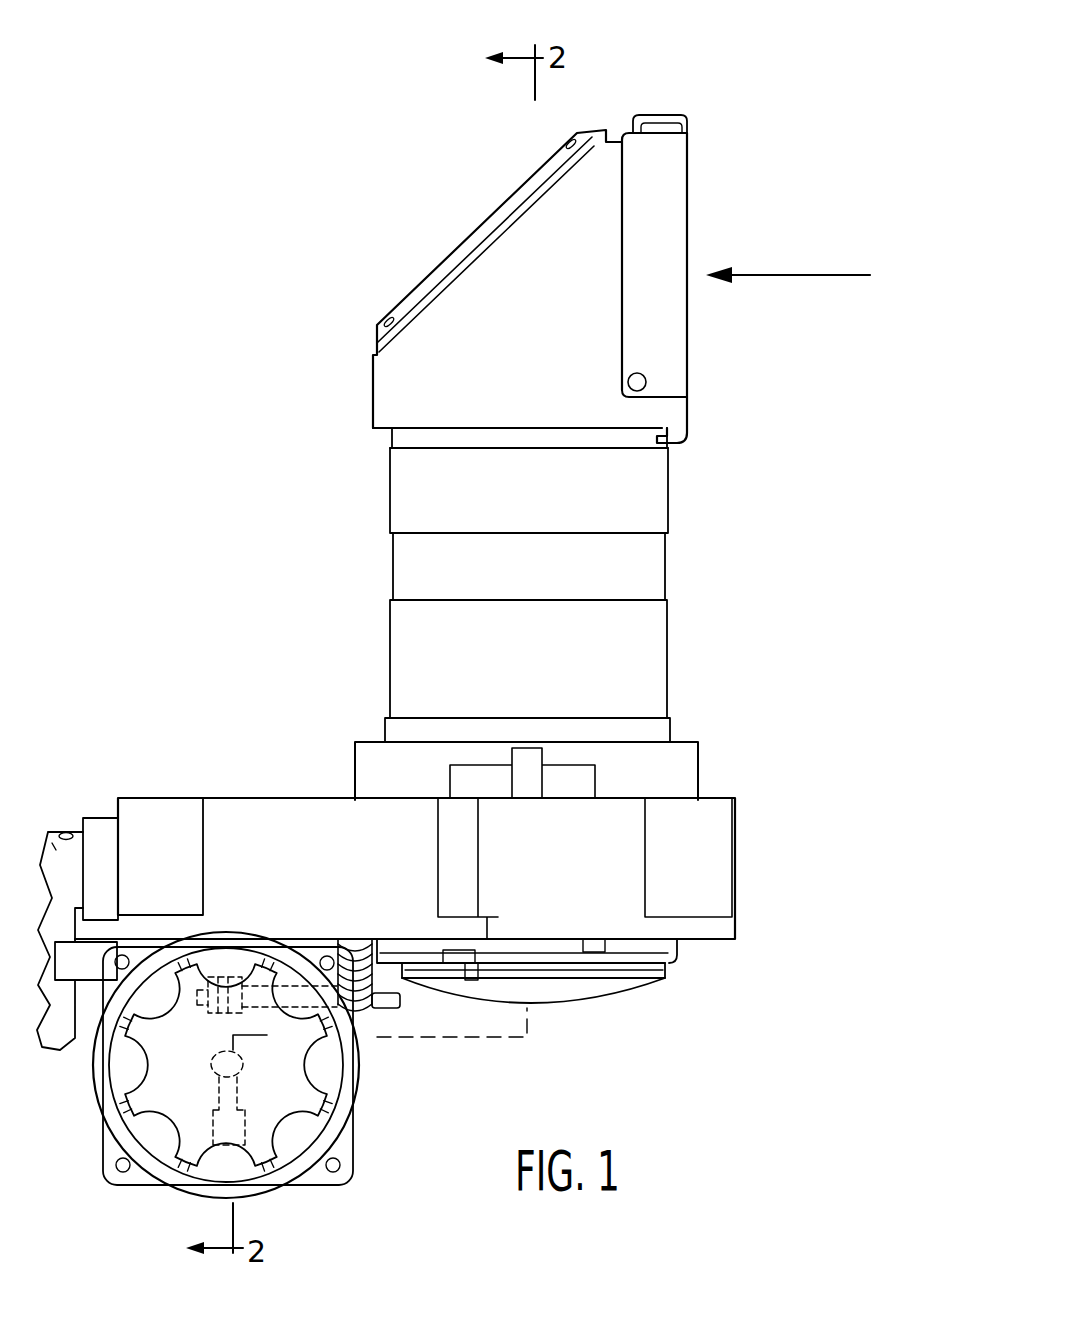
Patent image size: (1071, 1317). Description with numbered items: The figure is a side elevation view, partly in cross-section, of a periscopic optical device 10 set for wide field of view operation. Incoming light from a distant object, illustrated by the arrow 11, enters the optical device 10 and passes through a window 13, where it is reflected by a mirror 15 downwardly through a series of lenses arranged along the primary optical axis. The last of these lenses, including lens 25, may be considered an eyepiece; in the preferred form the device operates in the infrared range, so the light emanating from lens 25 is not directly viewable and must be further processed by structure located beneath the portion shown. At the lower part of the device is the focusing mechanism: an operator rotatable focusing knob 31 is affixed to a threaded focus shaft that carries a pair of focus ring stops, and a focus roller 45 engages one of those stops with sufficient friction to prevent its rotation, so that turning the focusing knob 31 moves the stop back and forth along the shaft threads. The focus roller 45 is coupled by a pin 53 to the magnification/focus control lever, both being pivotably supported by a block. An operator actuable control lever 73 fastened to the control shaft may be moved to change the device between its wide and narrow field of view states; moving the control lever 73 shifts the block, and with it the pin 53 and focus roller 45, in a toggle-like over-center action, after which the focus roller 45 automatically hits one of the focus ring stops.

The optical device 10 is at (714, 93).
The arrow 11 is at (782, 277).
The window 13 is at (690, 240).
The mirror 15 is at (485, 252).
The lens 25 is at (560, 992).
The focusing knob 31 is at (307, 1103).
The focus roller 45 is at (212, 1020).
The pin 53 is at (387, 998).
The control lever 73 is at (55, 832).